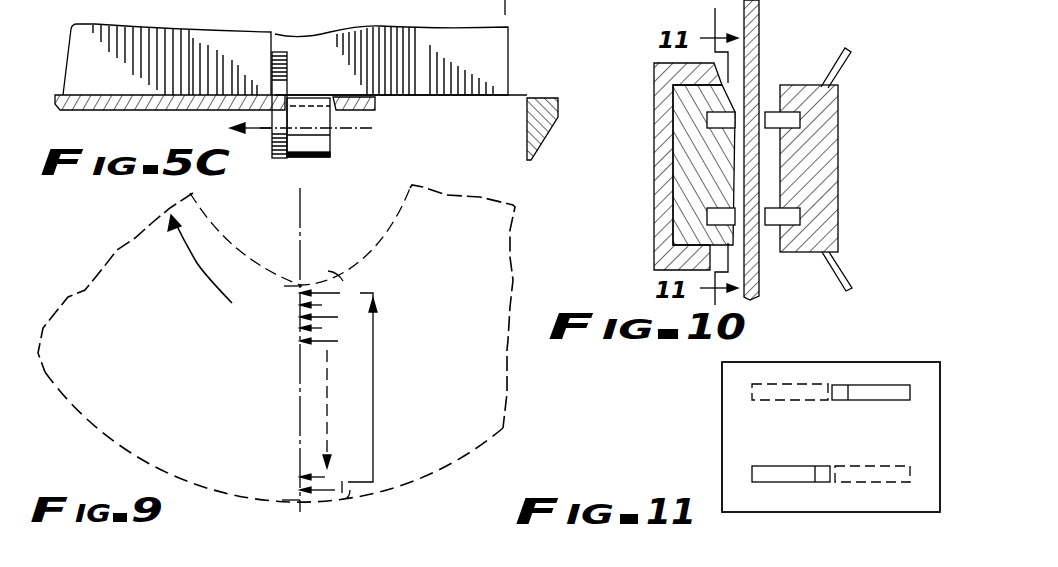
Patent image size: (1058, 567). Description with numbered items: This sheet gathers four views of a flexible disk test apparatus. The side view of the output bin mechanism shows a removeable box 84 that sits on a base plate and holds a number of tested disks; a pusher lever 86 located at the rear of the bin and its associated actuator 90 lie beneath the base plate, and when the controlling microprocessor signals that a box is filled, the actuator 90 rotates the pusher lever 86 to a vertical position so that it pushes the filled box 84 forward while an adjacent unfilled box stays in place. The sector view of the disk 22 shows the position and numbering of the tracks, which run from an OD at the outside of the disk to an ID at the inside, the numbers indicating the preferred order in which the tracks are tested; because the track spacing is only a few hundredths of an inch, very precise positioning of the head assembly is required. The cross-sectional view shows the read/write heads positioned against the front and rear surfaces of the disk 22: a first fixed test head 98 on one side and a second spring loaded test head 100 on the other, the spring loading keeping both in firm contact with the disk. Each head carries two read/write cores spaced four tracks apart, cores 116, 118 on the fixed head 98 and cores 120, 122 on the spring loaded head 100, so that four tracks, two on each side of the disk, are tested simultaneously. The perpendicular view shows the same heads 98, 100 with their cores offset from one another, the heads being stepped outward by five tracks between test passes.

In FIG. 9, the disk 22 is at (408, 251).
In FIG. 10, the disk 22 is at (760, 56).
In FIG. 5C, the removeable box 84 is at (242, 47).
In FIG. 5C, the pusher lever 86 is at (285, 80).
In FIG. 5C, the actuator 90 is at (322, 137).
In FIG. 10, the first fixed test head pair 98 is at (660, 165).
In FIG. 11, the first fixed test head pair 98 is at (797, 390).
In FIG. 10, the second spring load test head pair 100 is at (838, 152).
In FIG. 11, the second spring load test head pair 100 is at (872, 392).
In FIG. 10, the read/write core 116 is at (707, 120).
In FIG. 10, the read/write core 118 is at (710, 213).
In FIG. 10, the read/write core 120 is at (800, 119).
In FIG. 10, the read/write core 122 is at (800, 219).